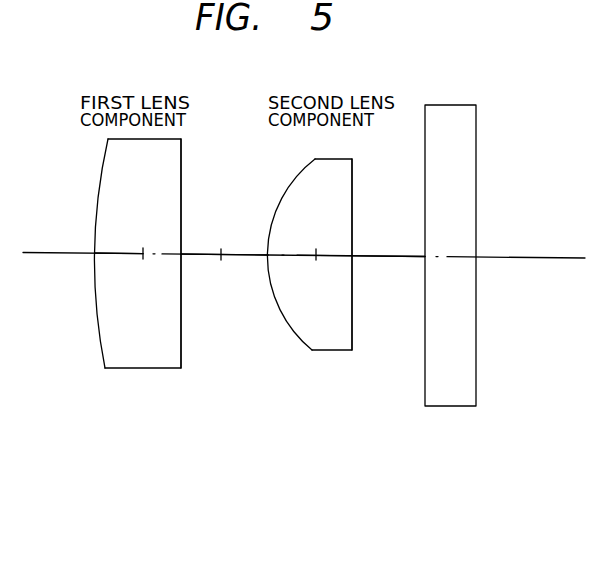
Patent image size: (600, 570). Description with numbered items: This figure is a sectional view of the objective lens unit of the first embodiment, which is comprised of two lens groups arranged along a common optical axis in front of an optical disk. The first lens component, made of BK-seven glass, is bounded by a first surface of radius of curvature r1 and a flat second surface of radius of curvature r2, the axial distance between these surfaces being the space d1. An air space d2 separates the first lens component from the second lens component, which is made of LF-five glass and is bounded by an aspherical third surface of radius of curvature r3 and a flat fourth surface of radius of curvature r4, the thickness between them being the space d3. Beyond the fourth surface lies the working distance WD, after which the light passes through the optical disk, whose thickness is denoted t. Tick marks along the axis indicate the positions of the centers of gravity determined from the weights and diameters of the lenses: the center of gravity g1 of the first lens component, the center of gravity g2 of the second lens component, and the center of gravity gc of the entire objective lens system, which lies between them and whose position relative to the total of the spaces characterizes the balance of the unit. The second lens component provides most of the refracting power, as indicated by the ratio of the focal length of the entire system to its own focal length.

The space between lens surfaces (thickness of first lens component) d1 is at (112, 253).
The space between lens surfaces (air space between lens components) d2 is at (236, 255).
The space between lens surfaces (thickness of second lens component) d3 is at (297, 255).
The center of gravity of first lens component g1 is at (142, 266).
The center of gravity of entire objective lens system gc is at (222, 264).
The center of gravity of second lens component g2 is at (317, 266).
The working distance WD is at (385, 255).
The thickness of optical disk t is at (455, 256).
The radius of curvature of first lens surface r1 is at (104, 359).
The radius of curvature of second lens surface r2 is at (181, 359).
The radius of curvature of third lens surface r3 is at (300, 345).
The radius of curvature of fourth lens surface r4 is at (351, 345).